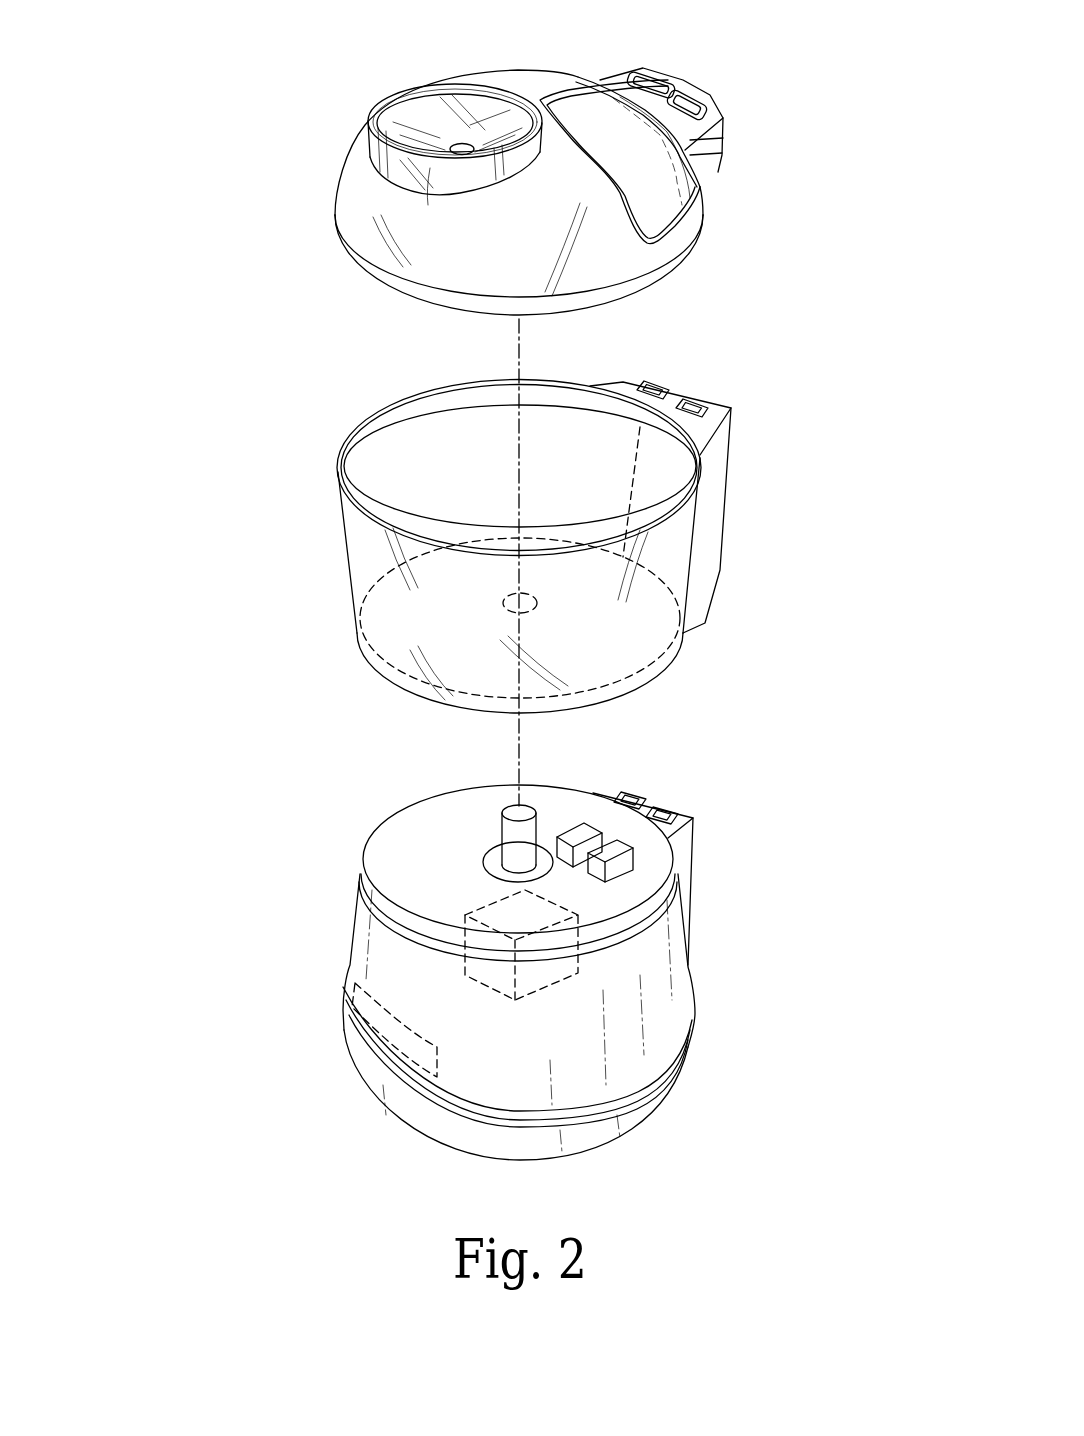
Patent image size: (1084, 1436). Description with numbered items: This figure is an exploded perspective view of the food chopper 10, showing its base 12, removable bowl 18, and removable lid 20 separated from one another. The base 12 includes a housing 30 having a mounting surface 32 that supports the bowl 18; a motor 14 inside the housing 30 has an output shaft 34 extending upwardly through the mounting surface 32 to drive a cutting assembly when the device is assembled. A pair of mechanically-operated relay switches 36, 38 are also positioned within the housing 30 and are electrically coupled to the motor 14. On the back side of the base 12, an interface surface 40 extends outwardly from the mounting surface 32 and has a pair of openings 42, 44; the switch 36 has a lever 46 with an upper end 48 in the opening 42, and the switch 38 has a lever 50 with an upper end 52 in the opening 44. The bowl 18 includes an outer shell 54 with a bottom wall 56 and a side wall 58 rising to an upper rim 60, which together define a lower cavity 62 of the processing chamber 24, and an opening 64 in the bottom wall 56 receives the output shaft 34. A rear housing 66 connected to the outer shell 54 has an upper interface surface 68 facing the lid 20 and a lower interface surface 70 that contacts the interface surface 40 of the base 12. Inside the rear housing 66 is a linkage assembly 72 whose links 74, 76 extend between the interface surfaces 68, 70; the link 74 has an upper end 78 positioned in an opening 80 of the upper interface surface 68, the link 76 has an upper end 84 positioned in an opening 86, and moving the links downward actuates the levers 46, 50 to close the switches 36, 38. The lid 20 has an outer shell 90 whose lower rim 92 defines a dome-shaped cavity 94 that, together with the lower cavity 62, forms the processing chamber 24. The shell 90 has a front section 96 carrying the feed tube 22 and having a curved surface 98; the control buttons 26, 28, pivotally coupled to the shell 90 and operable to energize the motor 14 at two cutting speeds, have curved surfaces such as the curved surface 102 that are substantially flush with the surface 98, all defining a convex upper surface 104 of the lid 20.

The food chopper 10 is at (228, 110).
The base 12 is at (714, 958).
The motor 14 is at (523, 987).
The bowl 18 is at (812, 495).
The lid 20 is at (812, 162).
The feed tube 22 is at (390, 98).
The processing chamber 24 is at (338, 310).
The control button 26 is at (508, 77).
The control button 28 is at (684, 190).
The housing 30 is at (627, 1072).
The mounting surface 32 is at (417, 820).
The output shaft 34 is at (512, 808).
The relay switch 36 is at (577, 832).
The relay switch 38 is at (617, 866).
The interface surface 40 is at (692, 828).
The opening 42 is at (622, 790).
The opening 44 is at (662, 805).
The lever 46 is at (632, 797).
The upper end 48 is at (658, 805).
The lever 50 is at (672, 817).
The upper end 52 is at (683, 827).
The outer shell 54 is at (345, 555).
The bottom wall 56 is at (627, 672).
The side wall 58 is at (685, 590).
The upper rim 60 is at (693, 490).
The lower cavity 62 is at (381, 477).
The opening 64 is at (538, 603).
The rear housing 66 is at (703, 547).
The upper interface surface 68 is at (633, 380).
The lower interface surface 70 is at (702, 638).
The linkage assembly 72 is at (740, 360).
The link 74 is at (660, 387).
The link 76 is at (707, 406).
The upper end 78 is at (688, 403).
The opening 80 is at (645, 380).
The upper end 84 is at (718, 407).
The opening 86 is at (716, 426).
The outer shell 90 is at (350, 160).
The lower rim 92 is at (672, 265).
The dome-shaped cavity 94 is at (418, 320).
The front section 96 is at (350, 205).
The curved surface 98 is at (483, 268).
The curved surface 102 is at (542, 82).
The convex upper surface 104 is at (422, 224).